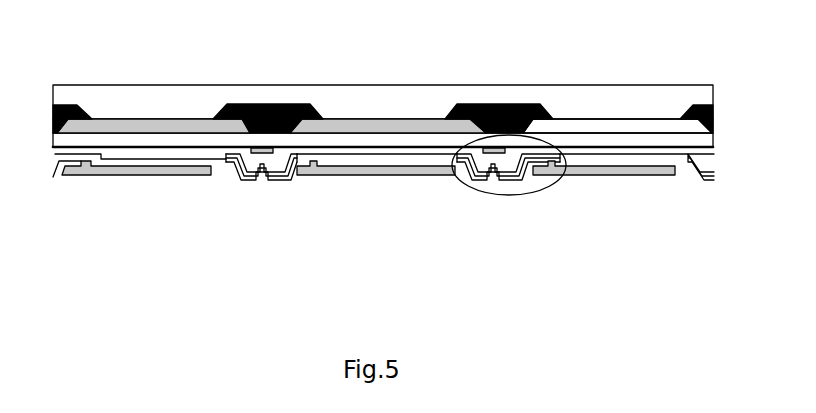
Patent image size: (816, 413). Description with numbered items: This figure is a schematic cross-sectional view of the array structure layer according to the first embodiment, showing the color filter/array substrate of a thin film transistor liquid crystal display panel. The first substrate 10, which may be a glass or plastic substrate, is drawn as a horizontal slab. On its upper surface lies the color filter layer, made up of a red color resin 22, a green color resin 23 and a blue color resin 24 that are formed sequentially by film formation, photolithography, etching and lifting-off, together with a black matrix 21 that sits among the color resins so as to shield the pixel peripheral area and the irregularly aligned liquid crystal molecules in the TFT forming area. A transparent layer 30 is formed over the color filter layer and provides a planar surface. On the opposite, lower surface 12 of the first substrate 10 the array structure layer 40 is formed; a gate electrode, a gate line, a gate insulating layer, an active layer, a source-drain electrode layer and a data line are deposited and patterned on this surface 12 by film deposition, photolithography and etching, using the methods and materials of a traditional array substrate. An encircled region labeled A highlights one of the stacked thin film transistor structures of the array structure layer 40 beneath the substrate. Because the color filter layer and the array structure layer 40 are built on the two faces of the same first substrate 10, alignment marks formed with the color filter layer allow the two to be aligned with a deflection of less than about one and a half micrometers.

The first substrate 10 is at (217, 142).
The other surface of the first substrate 12 is at (622, 146).
The black matrix 21 is at (482, 108).
The red color resin 22 is at (117, 125).
The green color resin 23 is at (387, 126).
The blue color resin 24 is at (597, 126).
The transparent layer 30 is at (282, 96).
The array structure layer 40 is at (205, 157).
The enlarged region A is at (535, 193).